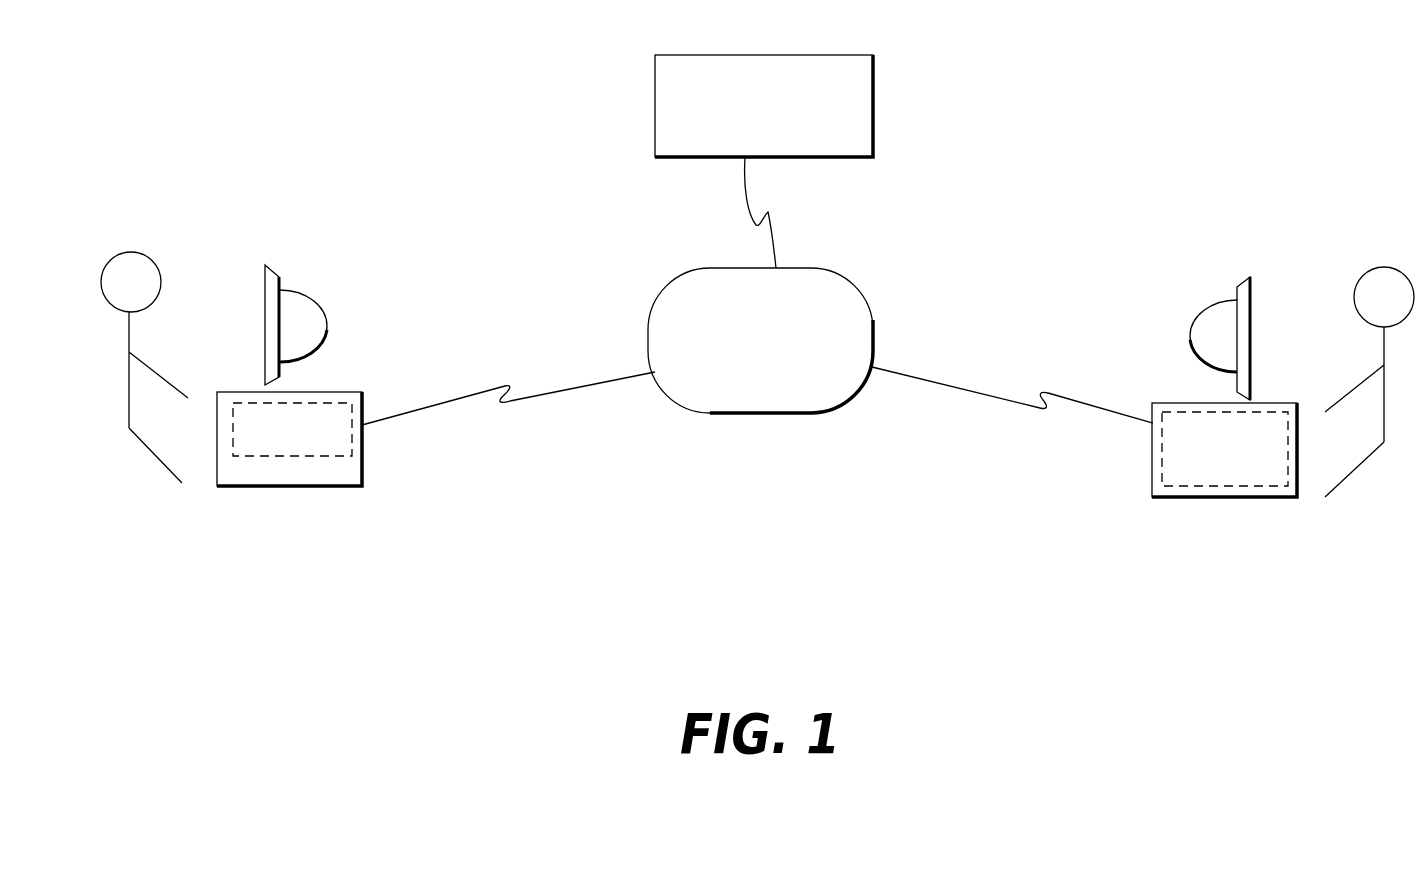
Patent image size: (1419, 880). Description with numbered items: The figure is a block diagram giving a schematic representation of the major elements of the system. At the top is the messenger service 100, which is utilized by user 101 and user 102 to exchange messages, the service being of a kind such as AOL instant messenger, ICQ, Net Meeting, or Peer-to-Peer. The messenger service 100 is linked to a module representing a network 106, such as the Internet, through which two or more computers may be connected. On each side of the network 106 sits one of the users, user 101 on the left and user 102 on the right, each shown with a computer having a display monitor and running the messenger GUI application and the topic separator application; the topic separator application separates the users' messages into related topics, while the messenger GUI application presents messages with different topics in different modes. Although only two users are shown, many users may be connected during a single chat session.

The messenger service 100 is at (873, 108).
The user 101 is at (130, 252).
The user 102 is at (1384, 267).
The network 106 is at (858, 298).